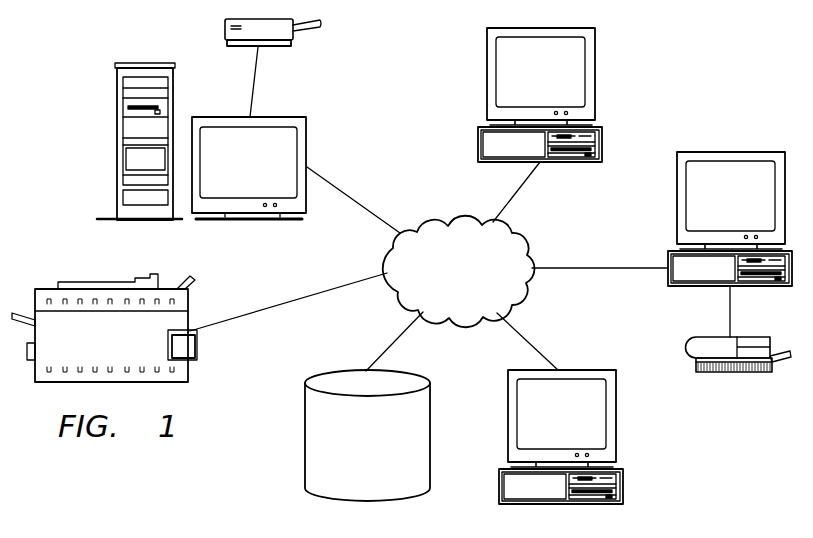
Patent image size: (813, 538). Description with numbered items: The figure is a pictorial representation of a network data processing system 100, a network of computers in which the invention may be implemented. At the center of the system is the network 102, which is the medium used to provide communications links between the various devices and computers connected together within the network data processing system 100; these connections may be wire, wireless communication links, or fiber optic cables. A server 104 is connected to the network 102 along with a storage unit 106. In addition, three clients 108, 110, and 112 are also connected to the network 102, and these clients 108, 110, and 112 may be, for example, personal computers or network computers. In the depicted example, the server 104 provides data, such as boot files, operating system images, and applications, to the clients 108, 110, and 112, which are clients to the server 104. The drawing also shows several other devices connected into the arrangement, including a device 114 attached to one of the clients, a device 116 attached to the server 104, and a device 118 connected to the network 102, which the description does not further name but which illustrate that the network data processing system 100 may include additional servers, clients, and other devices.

The network data processing system 100 is at (688, 96).
The network 102 is at (478, 283).
The server 104 is at (270, 170).
The storage unit 106 is at (388, 453).
The client 108 is at (560, 83).
The client 110 is at (748, 206).
The client 112 is at (582, 426).
The printer 114 is at (730, 374).
The peripheral device 116 is at (225, 30).
The network device 118 is at (127, 350).